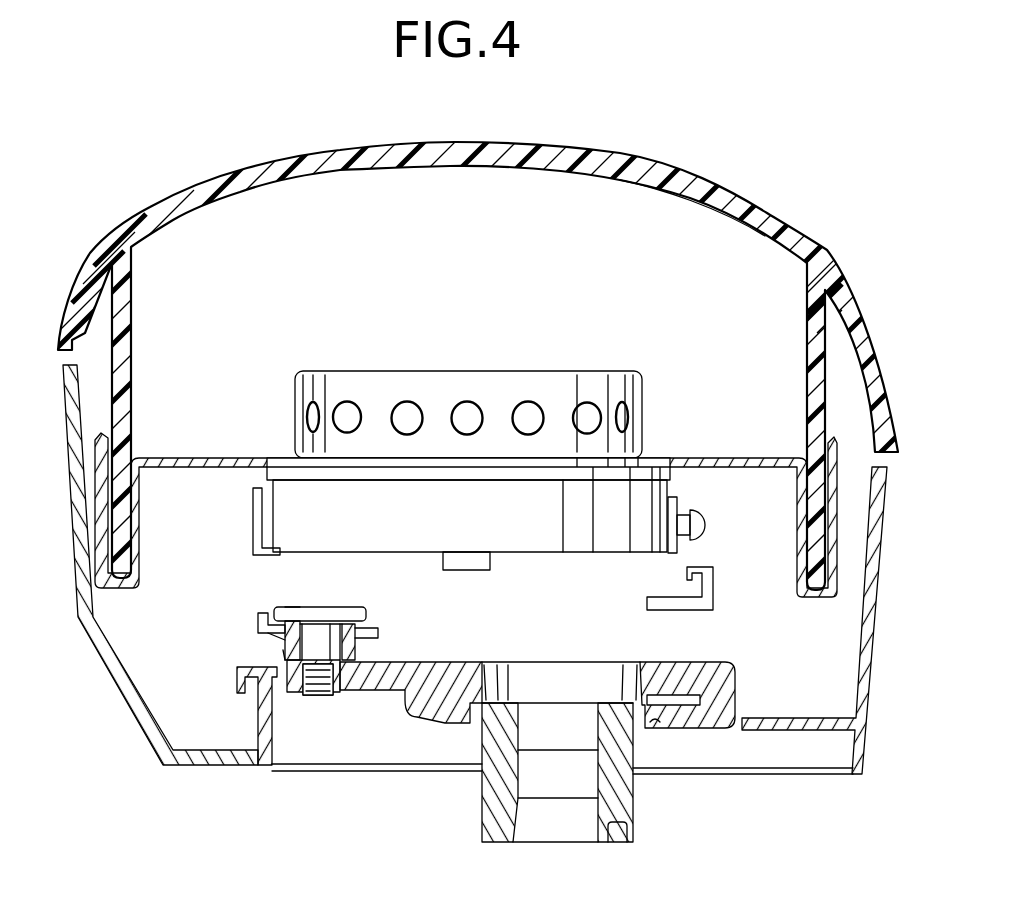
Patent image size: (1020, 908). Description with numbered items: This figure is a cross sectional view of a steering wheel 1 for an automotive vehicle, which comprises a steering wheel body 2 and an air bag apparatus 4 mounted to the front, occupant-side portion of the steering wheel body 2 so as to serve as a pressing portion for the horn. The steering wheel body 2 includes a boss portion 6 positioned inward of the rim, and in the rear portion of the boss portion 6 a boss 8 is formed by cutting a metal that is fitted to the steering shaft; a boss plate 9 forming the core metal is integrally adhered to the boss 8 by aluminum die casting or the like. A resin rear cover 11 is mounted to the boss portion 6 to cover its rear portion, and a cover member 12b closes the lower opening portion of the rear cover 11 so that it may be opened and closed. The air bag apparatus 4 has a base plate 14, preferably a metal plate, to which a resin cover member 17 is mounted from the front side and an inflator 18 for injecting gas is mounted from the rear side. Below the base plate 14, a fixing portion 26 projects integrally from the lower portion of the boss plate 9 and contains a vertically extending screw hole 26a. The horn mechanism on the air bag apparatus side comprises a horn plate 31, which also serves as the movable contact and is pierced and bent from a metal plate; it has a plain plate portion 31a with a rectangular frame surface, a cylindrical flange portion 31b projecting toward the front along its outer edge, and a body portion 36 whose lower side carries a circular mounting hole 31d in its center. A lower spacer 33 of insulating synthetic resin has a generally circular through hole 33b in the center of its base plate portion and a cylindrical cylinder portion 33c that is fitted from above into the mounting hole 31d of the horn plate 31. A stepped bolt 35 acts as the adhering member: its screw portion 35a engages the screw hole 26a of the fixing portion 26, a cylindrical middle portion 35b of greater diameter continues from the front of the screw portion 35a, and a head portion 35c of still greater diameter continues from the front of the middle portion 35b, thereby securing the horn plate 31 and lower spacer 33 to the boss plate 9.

The steering wheel 1 is at (481, 337).
The steering wheel body 2 is at (537, 760).
The air bag apparatus 4 is at (790, 222).
The boss portion 6 is at (787, 787).
The boss 8 is at (487, 820).
The boss plate 9 is at (441, 723).
The rear cover 11 is at (867, 730).
The cover member 12b is at (122, 685).
The base plate 14 is at (716, 457).
The cover member 17 is at (683, 172).
The inflator 18 is at (547, 380).
The fixing portion 26 is at (288, 686).
The screw hole 26a is at (338, 666).
The horn plate 31 is at (321, 624).
The plain plate portion 31a is at (382, 648).
The flange portion 31b is at (258, 614).
The mounting hole 31d is at (280, 636).
The lower spacer 33 is at (292, 616).
The through hole 33b is at (290, 608).
The cylinder portion 33c is at (283, 653).
The stepped bolt 35 is at (315, 676).
The screw portion 35a is at (320, 696).
The middle portion 35b is at (343, 673).
The head portion 35c is at (333, 606).
The body portion 36 is at (350, 620).